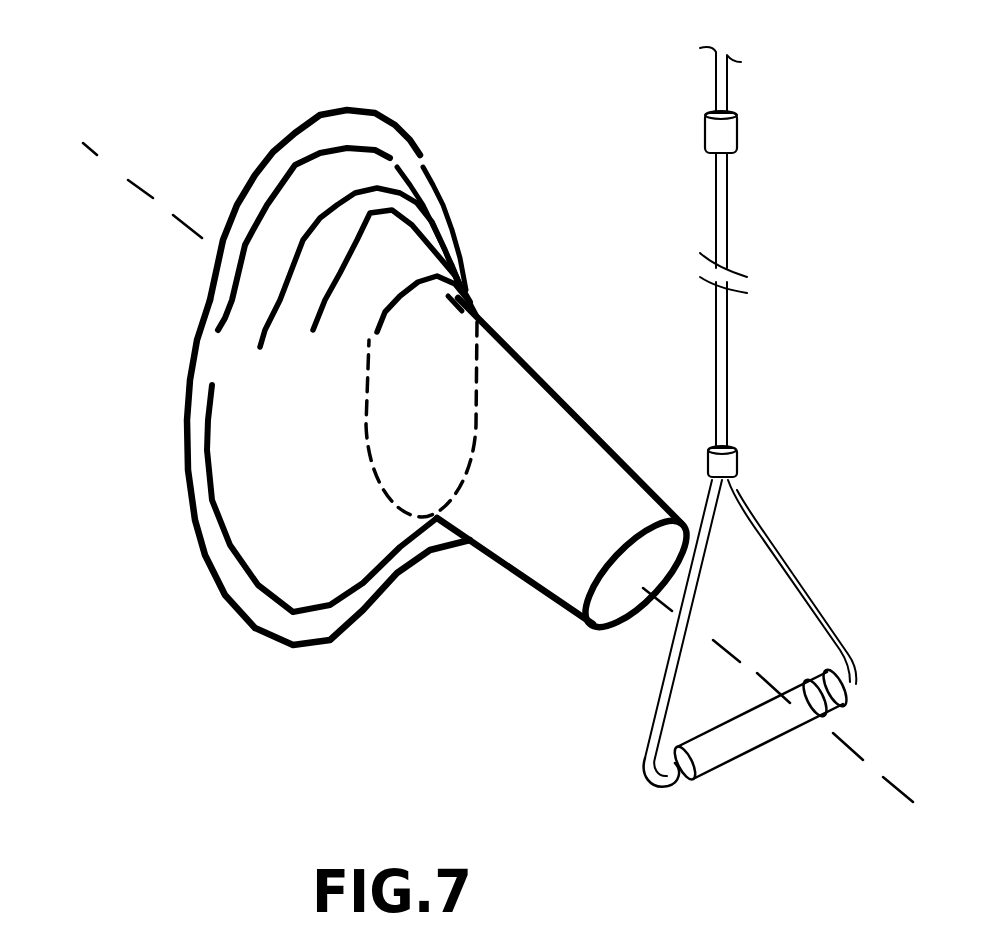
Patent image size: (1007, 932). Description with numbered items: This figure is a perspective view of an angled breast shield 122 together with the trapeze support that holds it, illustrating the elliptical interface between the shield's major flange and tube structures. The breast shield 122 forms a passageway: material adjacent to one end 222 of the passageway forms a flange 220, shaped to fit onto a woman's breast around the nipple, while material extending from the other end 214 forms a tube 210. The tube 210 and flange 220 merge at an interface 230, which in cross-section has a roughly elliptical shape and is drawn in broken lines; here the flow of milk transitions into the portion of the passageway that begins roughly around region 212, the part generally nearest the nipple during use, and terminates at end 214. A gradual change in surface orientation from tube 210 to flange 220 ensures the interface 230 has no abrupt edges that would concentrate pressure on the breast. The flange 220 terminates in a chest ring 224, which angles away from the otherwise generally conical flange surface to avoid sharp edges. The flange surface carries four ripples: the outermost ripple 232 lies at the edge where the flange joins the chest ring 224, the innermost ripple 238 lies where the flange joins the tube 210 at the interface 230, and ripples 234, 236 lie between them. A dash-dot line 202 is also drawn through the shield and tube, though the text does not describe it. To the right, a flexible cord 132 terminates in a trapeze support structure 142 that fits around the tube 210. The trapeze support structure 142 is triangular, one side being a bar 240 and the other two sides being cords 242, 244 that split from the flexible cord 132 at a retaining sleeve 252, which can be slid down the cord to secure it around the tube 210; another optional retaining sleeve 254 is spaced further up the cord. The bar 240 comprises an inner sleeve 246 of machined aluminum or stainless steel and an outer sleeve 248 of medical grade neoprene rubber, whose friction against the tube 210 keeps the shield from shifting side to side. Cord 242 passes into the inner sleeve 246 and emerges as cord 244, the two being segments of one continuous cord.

The breast shield 122 is at (522, 150).
The flexible cord 132 is at (745, 190).
The trapeze support structure 142 is at (758, 815).
The longitudinal axis 202 is at (138, 196).
The tube 210 is at (470, 580).
The region of the passageway 212 is at (480, 290).
The end of the passageway 214 is at (598, 577).
The flange 220 is at (444, 98).
The end of the passageway 222 is at (218, 590).
The chest ring 224 is at (322, 608).
The interface 230 is at (380, 472).
The outermost ripple 232 is at (283, 177).
The ripple 234 is at (381, 186).
The ripple 236 is at (343, 283).
The innermost ripple 238 is at (401, 295).
The bar 240 is at (724, 659).
The cord 242 is at (773, 550).
The cord 244 is at (657, 702).
The inner sleeve 246 is at (677, 787).
The outer sleeve 248 is at (783, 733).
The retaining sleeve 252 is at (738, 460).
The retaining sleeve 254 is at (738, 125).